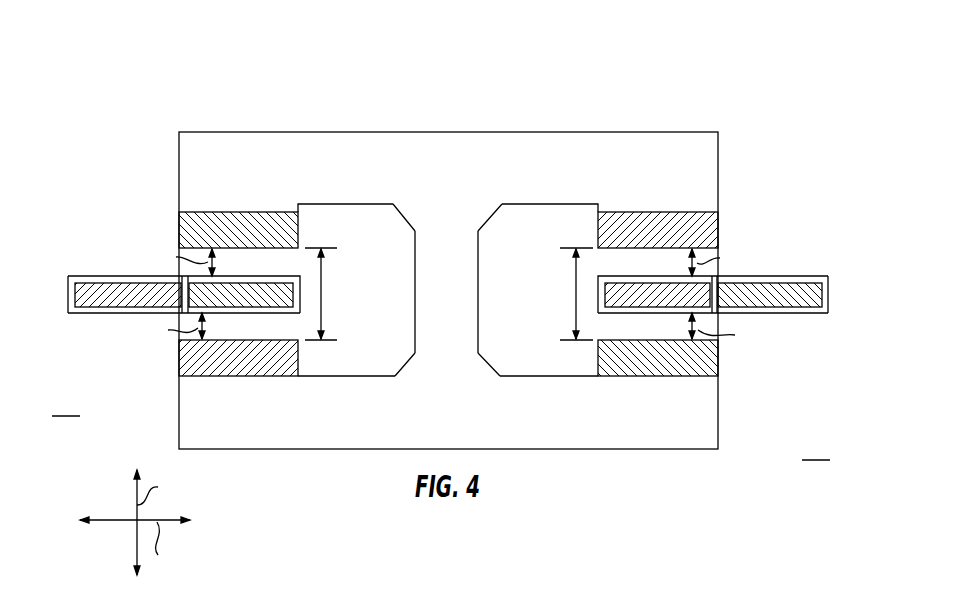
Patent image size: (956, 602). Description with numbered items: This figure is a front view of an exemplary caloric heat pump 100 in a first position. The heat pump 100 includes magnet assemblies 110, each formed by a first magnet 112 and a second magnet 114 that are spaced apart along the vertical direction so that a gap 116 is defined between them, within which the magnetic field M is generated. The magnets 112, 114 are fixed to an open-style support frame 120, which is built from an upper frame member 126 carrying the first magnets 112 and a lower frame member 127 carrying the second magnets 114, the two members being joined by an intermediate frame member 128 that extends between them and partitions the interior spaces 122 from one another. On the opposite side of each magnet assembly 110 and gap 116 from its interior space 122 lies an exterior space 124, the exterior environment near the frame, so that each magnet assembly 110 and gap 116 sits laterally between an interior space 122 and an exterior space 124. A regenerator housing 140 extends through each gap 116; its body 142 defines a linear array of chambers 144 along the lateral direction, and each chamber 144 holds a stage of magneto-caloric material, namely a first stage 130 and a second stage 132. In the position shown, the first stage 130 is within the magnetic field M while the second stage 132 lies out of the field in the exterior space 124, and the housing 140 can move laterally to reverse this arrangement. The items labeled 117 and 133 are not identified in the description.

The heat pump 100 is at (210, 105).
The magnet assembly 110 is at (142, 187).
The first magnet 112 is at (228, 228).
The second magnet 114 is at (243, 377).
The gap 116 is at (297, 267).
The cavity dimension 117 is at (321, 310).
The support frame 120 is at (480, 125).
The interior space 122 is at (380, 243).
The exterior space 124 is at (441, 427).
The upper frame member 126 is at (320, 155).
The lower frame member 127 is at (303, 413).
The intermediate frame member 128 is at (478, 242).
The first stage 130 is at (243, 298).
The second stage 132 is at (122, 300).
The outer layer portion 133 is at (752, 290).
The regenerator housing 140 is at (122, 274).
The body 142 is at (68, 287).
The chamber 144 is at (138, 312).